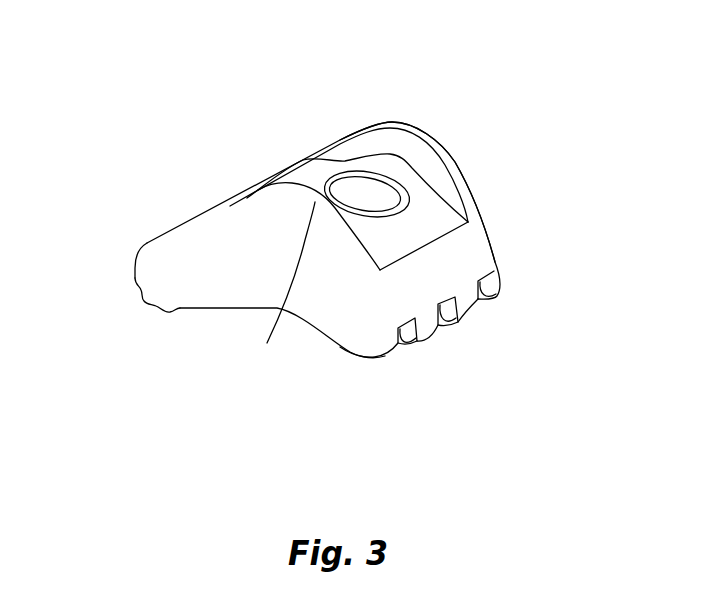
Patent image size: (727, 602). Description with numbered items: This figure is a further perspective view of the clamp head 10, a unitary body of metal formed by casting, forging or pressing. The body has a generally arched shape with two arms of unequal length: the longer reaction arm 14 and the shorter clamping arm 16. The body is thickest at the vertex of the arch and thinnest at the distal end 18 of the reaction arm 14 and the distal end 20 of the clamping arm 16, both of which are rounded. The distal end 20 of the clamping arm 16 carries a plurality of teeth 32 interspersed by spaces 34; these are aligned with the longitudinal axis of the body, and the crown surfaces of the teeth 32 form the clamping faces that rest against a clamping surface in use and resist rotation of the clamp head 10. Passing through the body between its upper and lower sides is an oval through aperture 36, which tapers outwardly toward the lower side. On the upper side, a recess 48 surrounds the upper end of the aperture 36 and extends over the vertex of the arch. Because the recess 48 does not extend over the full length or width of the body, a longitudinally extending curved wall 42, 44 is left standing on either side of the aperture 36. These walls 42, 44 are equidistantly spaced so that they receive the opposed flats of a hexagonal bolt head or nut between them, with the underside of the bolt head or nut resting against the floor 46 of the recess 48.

The clamp head 10 is at (503, 93).
The reaction arm 14 is at (175, 259).
The clamping arm 16 is at (381, 346).
The distal end of the reaction arm 18 is at (134, 278).
The distal end of the clamping arm 20 is at (380, 350).
The teeth 32 is at (466, 322).
The spaces 34 is at (403, 347).
The through aperture 36 is at (357, 183).
The curved wall 42 is at (286, 291).
The curved wall 44 is at (438, 135).
The floor of the recess 46 is at (405, 165).
The recess 48 is at (437, 222).